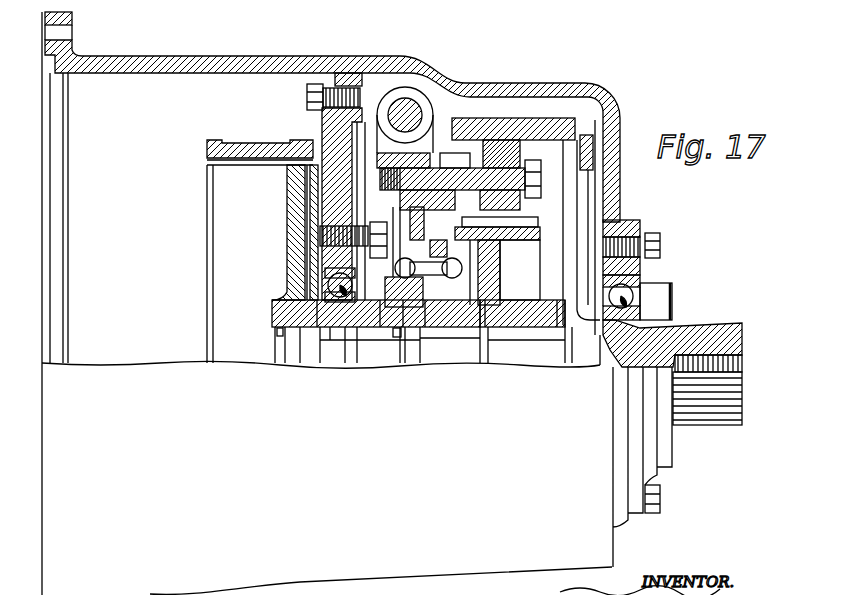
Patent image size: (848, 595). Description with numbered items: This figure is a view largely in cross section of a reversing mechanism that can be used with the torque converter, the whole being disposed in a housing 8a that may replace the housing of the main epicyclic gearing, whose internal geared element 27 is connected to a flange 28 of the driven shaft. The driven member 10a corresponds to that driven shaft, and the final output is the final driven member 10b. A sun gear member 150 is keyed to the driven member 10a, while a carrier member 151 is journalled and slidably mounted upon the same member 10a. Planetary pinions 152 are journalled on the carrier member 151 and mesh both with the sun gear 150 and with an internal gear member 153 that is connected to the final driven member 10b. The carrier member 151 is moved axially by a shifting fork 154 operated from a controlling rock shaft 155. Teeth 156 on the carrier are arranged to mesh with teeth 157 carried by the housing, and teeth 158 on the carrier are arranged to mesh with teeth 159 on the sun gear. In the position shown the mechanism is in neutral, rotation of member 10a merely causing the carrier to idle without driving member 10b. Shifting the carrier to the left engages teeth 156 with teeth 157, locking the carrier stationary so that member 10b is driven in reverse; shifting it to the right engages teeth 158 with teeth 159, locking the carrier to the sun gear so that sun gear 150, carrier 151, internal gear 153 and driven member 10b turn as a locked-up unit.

The housing 8a is at (423, 86).
The internal geared element 27 is at (240, 143).
The flange 28 is at (290, 250).
The driven member 10a is at (307, 366).
The final driven member 10b is at (710, 330).
The sun gear member 150 is at (518, 365).
The carrier member 151 is at (430, 365).
The planetary pinions 152 is at (500, 160).
The internal gear member 153 is at (572, 118).
The shifting fork 154 is at (423, 150).
The controlling rock shaft 155 is at (405, 117).
The teeth on carrier member 156 is at (365, 232).
The teeth carried by housing 157 is at (380, 212).
The teeth on carrier member 158 is at (496, 260).
The teeth on sun gear 159 is at (560, 224).